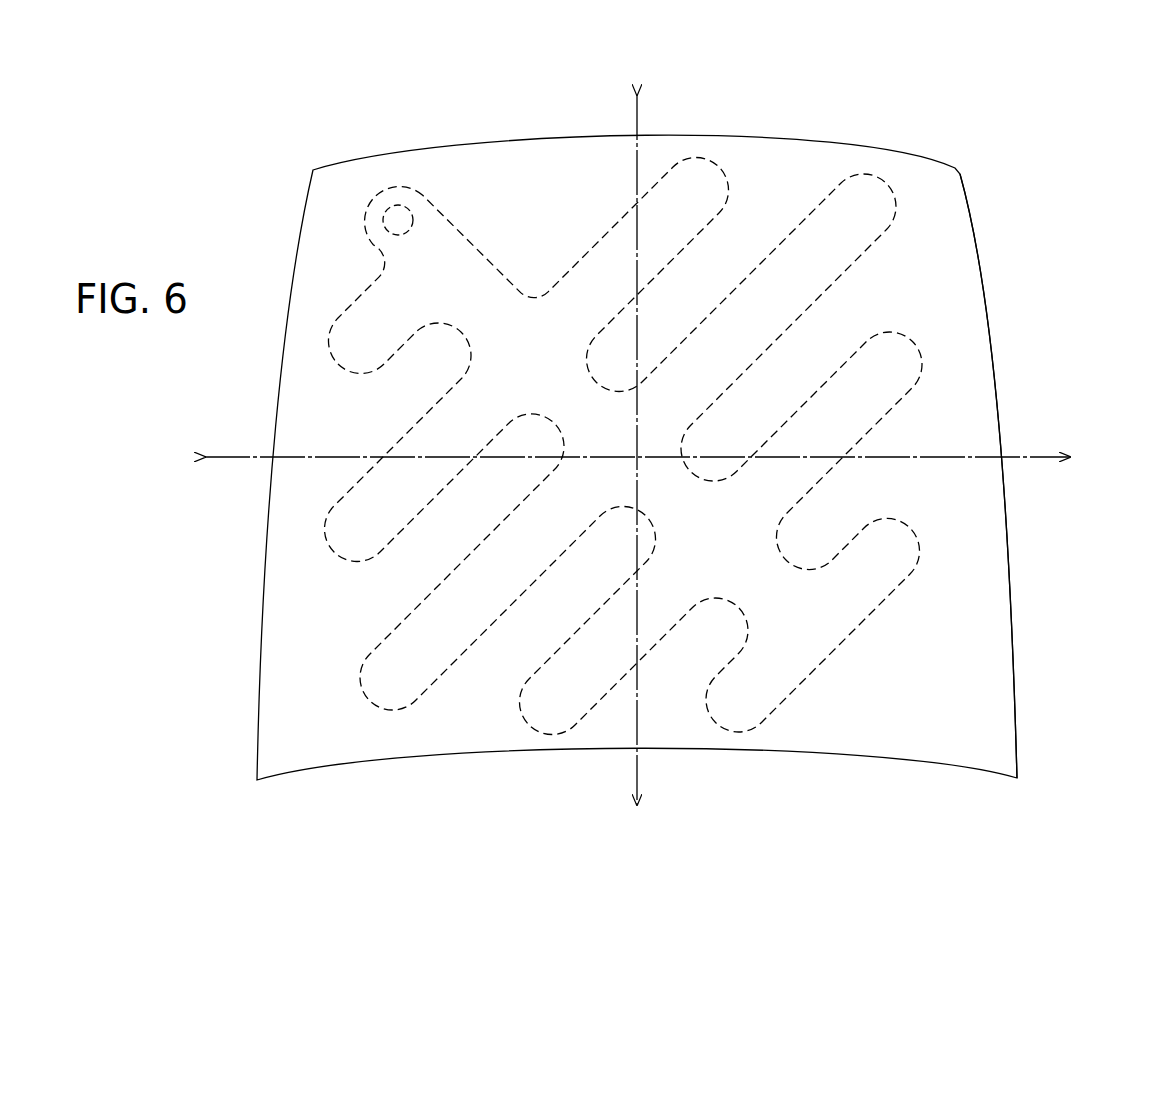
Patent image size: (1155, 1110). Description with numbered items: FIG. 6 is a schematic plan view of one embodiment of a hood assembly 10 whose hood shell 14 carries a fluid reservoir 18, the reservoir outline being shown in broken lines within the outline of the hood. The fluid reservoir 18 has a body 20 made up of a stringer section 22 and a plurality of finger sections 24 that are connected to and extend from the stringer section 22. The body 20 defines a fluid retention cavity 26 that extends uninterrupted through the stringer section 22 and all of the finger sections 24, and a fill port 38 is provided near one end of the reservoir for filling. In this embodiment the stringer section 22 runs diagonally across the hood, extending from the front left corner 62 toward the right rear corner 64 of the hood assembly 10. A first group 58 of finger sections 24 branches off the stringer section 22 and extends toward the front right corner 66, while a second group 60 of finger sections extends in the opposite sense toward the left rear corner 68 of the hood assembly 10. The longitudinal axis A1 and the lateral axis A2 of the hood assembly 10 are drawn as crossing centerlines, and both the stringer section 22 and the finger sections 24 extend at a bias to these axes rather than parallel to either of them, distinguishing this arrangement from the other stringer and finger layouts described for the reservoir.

The hood assembly 10 is at (1020, 118).
The hood shell 14 is at (966, 428).
The fluid reservoir 18 is at (914, 271).
The body 20 is at (865, 618).
The stringer section 22 is at (505, 343).
The finger sections 24 is at (722, 168).
The fluid retention cavity 26 is at (777, 667).
The fill port 38 is at (390, 206).
The first group of finger sections 58 is at (627, 186).
The second group of finger sections 60 is at (343, 296).
The front left corner 62 is at (313, 172).
The right rear corner 64 is at (1017, 778).
The front right corner 66 is at (960, 172).
The left rear corner 68 is at (257, 780).
The longitudinal axis A1 is at (638, 113).
The lateral axis A2 is at (1040, 463).